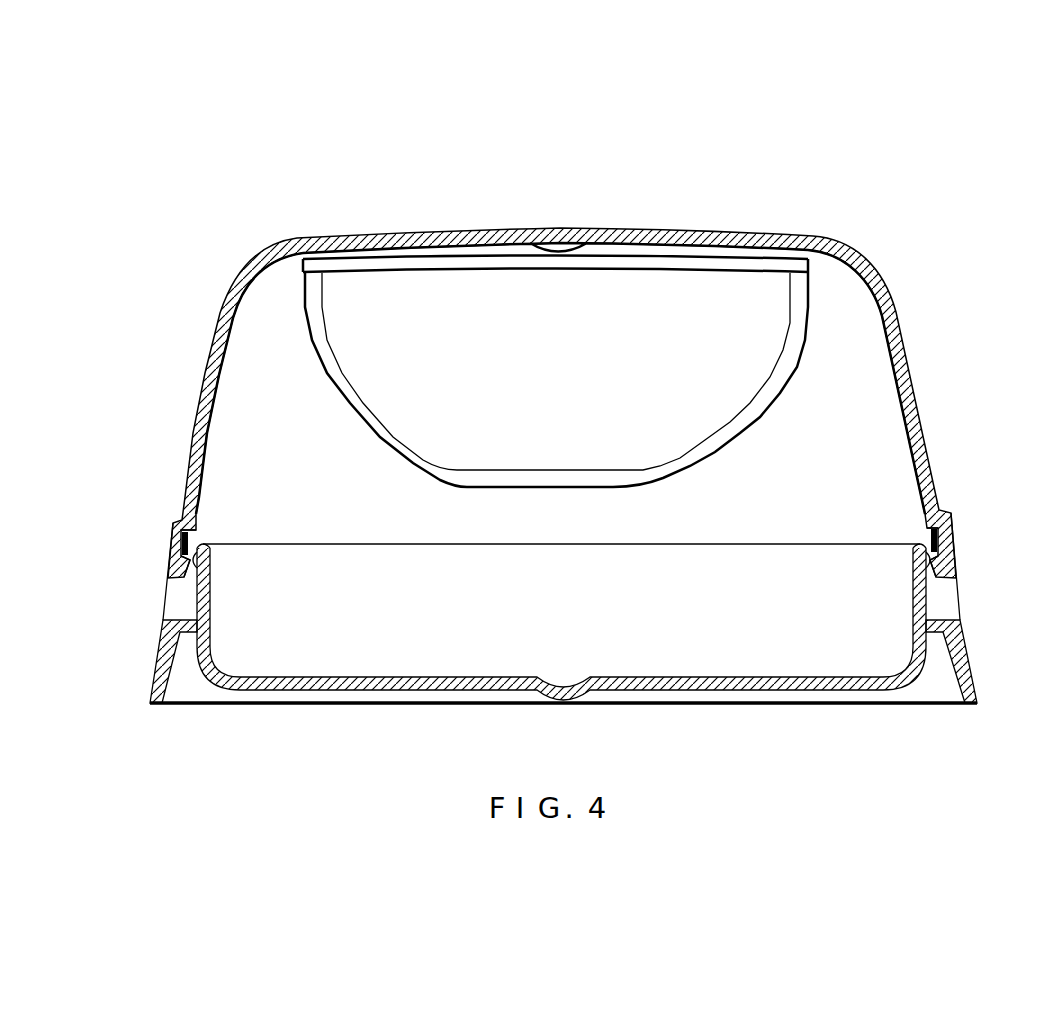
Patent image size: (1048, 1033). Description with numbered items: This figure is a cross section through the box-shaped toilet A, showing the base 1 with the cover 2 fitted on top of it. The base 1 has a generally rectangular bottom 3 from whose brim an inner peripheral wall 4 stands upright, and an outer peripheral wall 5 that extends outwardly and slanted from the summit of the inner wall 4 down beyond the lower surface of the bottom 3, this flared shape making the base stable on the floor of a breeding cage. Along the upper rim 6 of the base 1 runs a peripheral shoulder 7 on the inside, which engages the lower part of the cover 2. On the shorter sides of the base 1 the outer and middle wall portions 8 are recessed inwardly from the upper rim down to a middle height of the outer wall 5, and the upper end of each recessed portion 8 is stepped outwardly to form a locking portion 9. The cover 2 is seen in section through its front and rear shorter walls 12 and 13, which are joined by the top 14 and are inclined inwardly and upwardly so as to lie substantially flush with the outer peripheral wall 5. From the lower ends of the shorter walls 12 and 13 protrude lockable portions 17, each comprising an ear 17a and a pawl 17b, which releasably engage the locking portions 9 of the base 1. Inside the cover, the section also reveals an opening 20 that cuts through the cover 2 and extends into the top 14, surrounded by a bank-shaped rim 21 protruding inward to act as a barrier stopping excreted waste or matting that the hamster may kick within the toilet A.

The base 1 is at (561, 588).
The cover 2 is at (554, 361).
The bottom 3 is at (643, 678).
The inner peripheral wall 4 is at (211, 598).
The outer peripheral wall 5 is at (152, 673).
The upper rim 6 is at (195, 530).
The peripheral shoulder 7 is at (197, 550).
The recessed wall portion 8 is at (178, 615).
The locking portion 9 is at (200, 572).
The front shorter wall 12 is at (205, 378).
The rear shorter wall 13 is at (898, 312).
The top 14 is at (607, 228).
The lockable portion 17 is at (554, 537).
The ear 17a is at (180, 540).
The pawl 17b is at (110, 515).
The opening 20 is at (414, 300).
The bank-shaped rim 21 is at (742, 428).
The toilet A is at (844, 214).